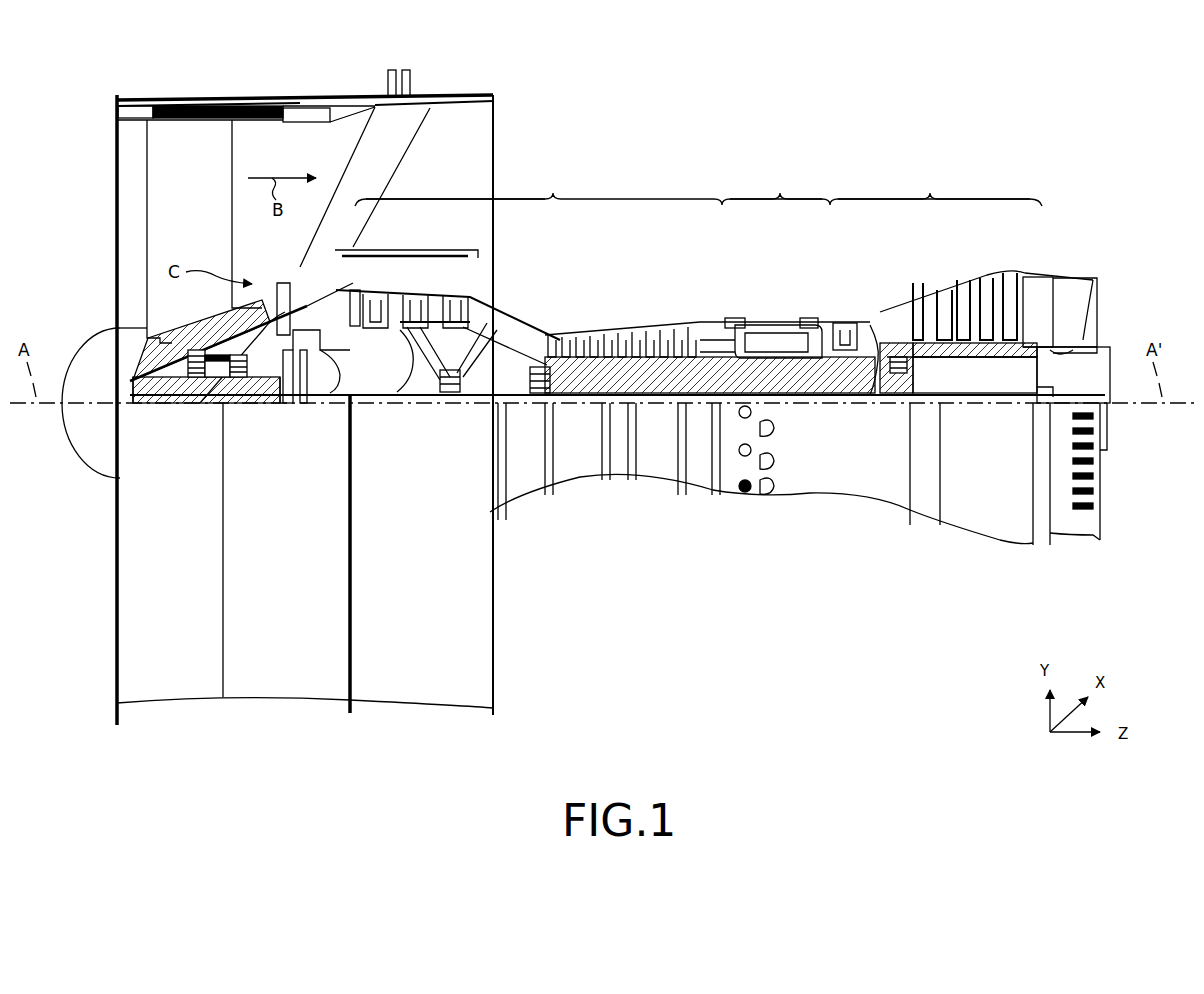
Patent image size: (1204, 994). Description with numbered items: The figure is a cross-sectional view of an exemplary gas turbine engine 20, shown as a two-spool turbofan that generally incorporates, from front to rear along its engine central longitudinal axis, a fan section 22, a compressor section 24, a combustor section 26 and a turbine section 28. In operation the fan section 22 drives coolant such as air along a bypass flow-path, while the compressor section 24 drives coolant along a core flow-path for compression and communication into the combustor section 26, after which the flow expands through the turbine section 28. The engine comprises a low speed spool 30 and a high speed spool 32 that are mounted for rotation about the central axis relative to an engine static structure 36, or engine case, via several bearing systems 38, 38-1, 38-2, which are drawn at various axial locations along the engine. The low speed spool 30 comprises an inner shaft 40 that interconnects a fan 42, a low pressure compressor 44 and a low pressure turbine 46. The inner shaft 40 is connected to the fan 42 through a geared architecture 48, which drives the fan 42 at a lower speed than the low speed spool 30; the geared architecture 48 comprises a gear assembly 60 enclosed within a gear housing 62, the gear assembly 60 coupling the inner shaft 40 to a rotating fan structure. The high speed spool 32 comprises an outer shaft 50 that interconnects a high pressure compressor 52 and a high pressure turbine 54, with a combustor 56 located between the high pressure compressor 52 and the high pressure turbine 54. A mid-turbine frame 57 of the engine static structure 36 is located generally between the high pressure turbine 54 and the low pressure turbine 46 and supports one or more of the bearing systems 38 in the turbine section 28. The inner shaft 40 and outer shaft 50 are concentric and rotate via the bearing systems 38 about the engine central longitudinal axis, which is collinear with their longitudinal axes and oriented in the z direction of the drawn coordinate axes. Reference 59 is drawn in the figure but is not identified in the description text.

The gas turbine engine 20 is at (828, 128).
The fan section 22 is at (348, 76).
The compressor section 24 is at (465, 183).
The combustor section 26 is at (776, 183).
The turbine section 28 is at (934, 183).
The low speed spool 30 is at (660, 412).
The high speed spool 32 is at (688, 364).
The engine static structure 36 is at (284, 689).
The bearing system 38 is at (882, 404).
The bearing system 38-1 is at (212, 401).
The bearing system 38-2 is at (447, 396).
The inner shaft 40 is at (514, 408).
The fan 42 is at (195, 220).
The low pressure compressor 44 is at (429, 304).
The low pressure turbine 46 is at (965, 310).
The geared architecture 48 is at (314, 412).
The outer shaft 50 is at (764, 406).
The high pressure compressor 52 is at (634, 358).
The high pressure turbine 54 is at (843, 320).
The combustor 56 is at (770, 335).
The mid-turbine frame 57 is at (886, 328).
The airfoils 59 is at (896, 326).
The gear assembly 60 is at (327, 387).
The gear housing 62 is at (325, 357).